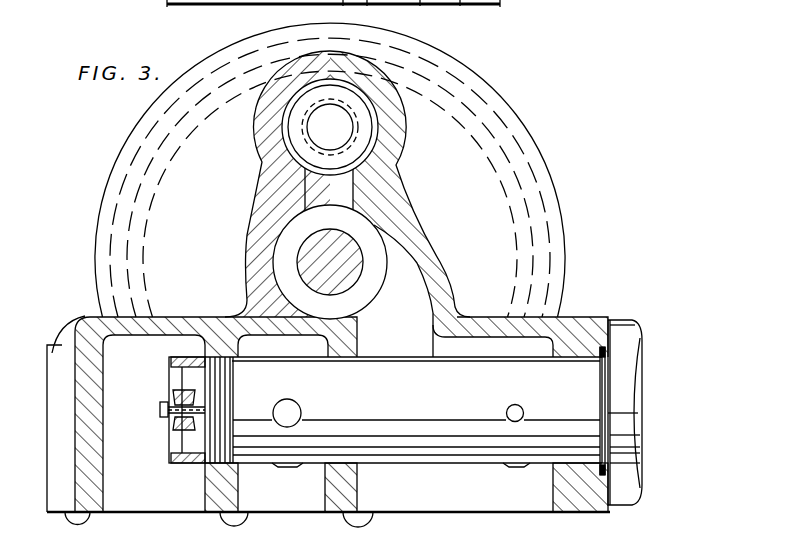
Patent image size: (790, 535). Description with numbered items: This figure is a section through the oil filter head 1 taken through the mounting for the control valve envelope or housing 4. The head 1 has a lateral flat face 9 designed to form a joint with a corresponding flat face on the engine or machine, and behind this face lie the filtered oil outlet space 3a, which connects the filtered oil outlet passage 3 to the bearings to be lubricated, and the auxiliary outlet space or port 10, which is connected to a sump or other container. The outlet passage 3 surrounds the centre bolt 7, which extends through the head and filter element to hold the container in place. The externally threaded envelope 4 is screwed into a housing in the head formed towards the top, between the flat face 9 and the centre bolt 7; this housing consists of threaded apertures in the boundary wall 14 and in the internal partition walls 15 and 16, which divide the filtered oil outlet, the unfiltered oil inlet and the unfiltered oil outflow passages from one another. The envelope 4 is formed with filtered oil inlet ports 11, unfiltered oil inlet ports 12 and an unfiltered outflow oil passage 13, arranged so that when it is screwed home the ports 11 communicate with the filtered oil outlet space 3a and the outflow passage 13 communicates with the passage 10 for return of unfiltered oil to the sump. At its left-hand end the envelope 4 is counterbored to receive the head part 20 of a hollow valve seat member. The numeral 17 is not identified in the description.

The head 1 is at (583, 317).
The outlet passage for filtered oil 3 is at (372, 262).
The outlet space 3a is at (484, 510).
The envelope or housing 4 is at (452, 467).
The centre bolt 7 is at (347, 280).
The lateral flat face 9 is at (68, 513).
The auxiliary outlet space or port 10 is at (147, 506).
The filtered oil inlet ports 11 is at (515, 467).
The unfiltered oil inlet ports 12 is at (288, 466).
The unfiltered outflow oil passage 13 is at (171, 442).
The boundary wall 14 is at (565, 501).
The internal partition wall 15 is at (357, 487).
The internal partition wall 16 is at (233, 494).
The foot 17 is at (367, 523).
The head part of valve seat member 20 is at (317, 511).